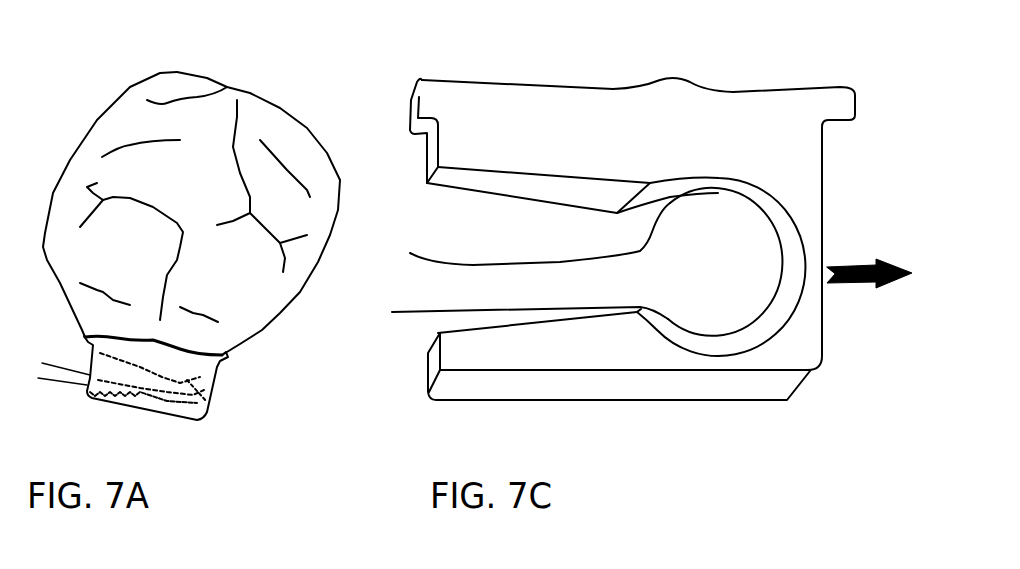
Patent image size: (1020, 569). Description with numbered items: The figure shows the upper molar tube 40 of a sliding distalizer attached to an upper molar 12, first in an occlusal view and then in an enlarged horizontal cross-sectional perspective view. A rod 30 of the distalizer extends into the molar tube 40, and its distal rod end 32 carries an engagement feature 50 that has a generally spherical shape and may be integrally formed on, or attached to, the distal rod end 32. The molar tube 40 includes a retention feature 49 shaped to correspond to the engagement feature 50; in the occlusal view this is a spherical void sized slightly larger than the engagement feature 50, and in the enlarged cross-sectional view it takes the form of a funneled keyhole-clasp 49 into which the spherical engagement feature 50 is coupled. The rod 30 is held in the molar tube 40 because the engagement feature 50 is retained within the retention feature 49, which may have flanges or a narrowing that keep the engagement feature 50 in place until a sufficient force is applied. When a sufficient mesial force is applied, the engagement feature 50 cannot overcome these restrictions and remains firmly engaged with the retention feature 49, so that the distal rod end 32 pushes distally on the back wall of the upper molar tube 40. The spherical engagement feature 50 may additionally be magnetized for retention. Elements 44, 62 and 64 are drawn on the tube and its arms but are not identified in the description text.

In FIG. 7A, the upper molar 12 is at (211, 297).
In FIG. 7A, the rod 30 is at (57, 380).
In FIG. 7C, the rod 30 is at (445, 300).
In FIG. 7A, the distal rod end 32 is at (157, 388).
In FIG. 7C, the distal rod end 32 is at (617, 288).
In FIG. 7A, the upper molar tube 40 is at (203, 370).
In FIG. 7C, the upper molar tube 40 is at (770, 153).
In FIG. 7A, the flexible upper arm 44 is at (140, 380).
In FIG. 7C, the flexible upper arm 44 is at (630, 230).
In FIG. 7A, the retention feature 49 is at (202, 382).
In FIG. 7C, the retention feature 49 is at (725, 177).
In FIG. 7A, the engagement feature 50 is at (193, 397).
In FIG. 7C, the engagement feature 50 is at (747, 258).
In FIG. 7C, the corner edge of lower arm 62 is at (637, 313).
In FIG. 7C, the end face of upper arm 64 is at (650, 178).